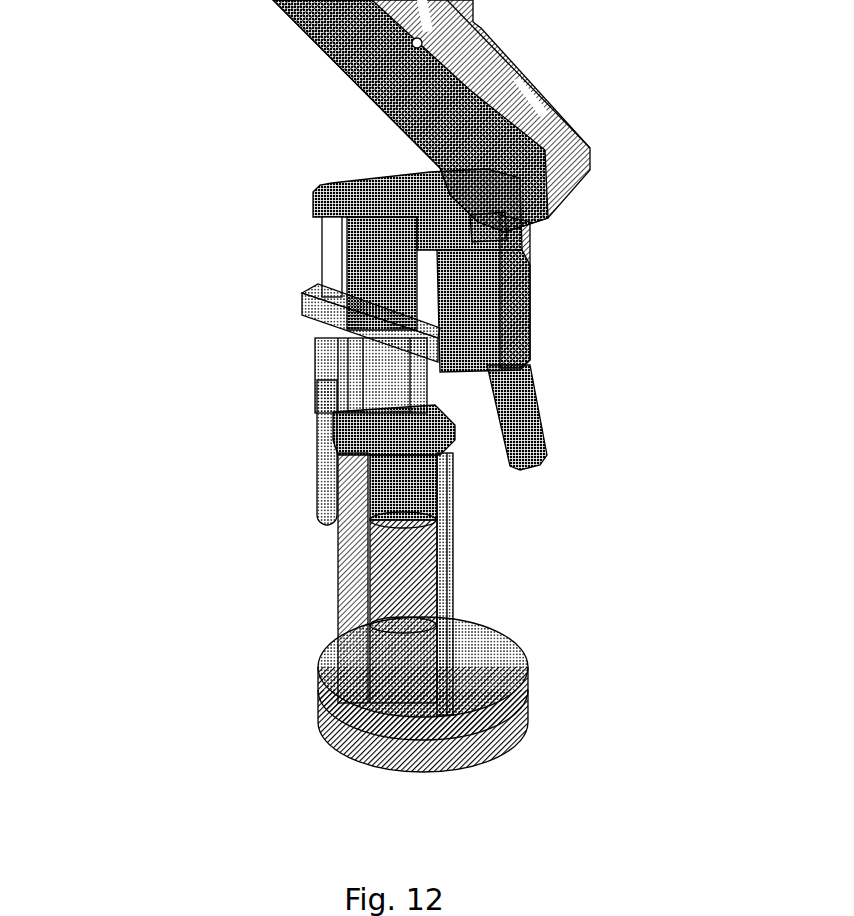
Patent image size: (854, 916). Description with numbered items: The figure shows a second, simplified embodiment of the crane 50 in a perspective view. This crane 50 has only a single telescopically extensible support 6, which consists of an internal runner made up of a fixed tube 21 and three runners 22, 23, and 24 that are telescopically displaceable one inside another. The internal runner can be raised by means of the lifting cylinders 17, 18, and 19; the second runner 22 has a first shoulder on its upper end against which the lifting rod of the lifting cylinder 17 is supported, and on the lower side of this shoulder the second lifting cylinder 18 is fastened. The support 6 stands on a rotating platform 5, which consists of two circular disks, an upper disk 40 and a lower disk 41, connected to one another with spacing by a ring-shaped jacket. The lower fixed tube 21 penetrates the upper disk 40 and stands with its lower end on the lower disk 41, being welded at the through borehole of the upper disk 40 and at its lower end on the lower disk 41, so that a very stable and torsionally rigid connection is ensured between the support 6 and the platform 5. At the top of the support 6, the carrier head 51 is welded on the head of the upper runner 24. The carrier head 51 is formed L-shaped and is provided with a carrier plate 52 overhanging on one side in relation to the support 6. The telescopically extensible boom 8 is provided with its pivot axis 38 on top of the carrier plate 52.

The rotating platform 5 is at (443, 701).
The telescopically extensible support 6 is at (434, 501).
The telescopically extensible boom 8 is at (548, 135).
The lifting cylinder 17 is at (440, 630).
The lifting cylinder 18 is at (355, 535).
The lifting cylinder 19 is at (325, 375).
The fixed tube 21 is at (395, 595).
The second runner 22 is at (393, 497).
The runner 23 is at (392, 394).
The upper runner 24 is at (358, 270).
The pivot axis 38 is at (480, 235).
The upper disk 40 is at (510, 690).
The lower disk 41 is at (490, 748).
The crane 50 is at (400, 392).
The carrier head 51 is at (390, 195).
The carrier plate 52 is at (470, 320).